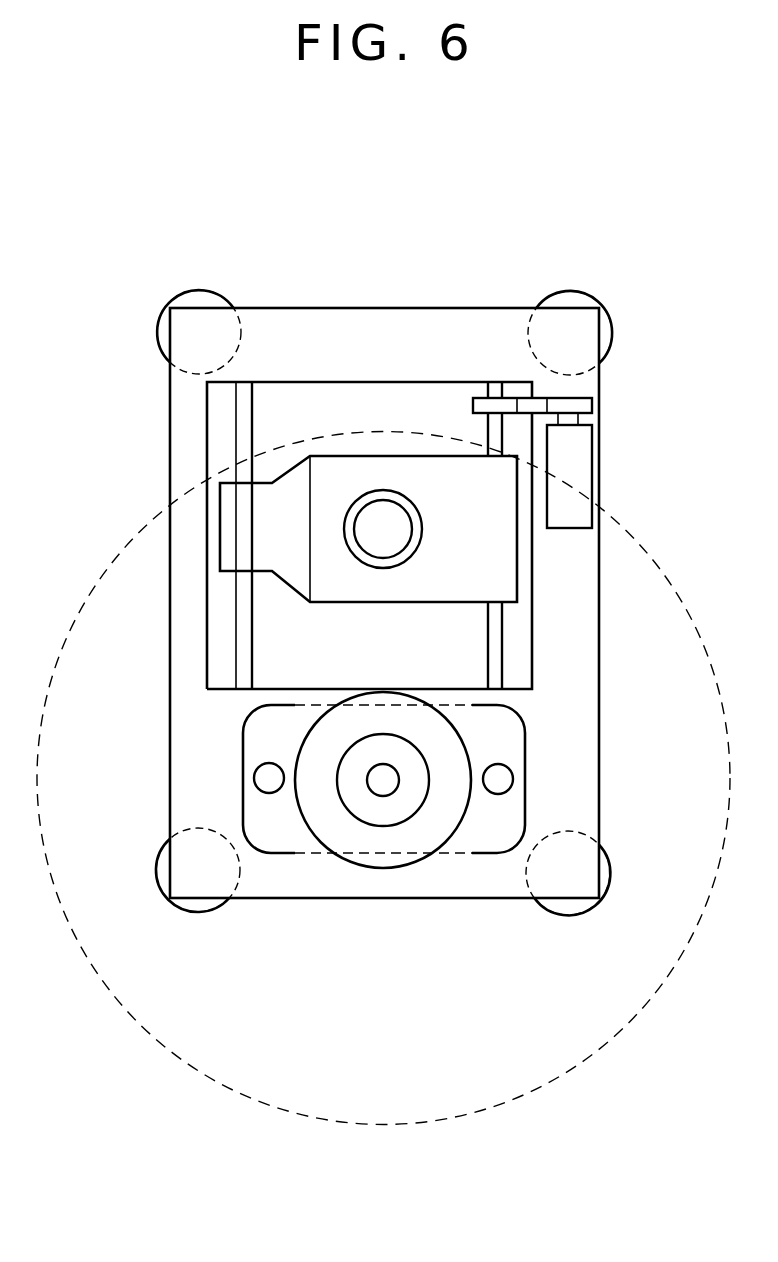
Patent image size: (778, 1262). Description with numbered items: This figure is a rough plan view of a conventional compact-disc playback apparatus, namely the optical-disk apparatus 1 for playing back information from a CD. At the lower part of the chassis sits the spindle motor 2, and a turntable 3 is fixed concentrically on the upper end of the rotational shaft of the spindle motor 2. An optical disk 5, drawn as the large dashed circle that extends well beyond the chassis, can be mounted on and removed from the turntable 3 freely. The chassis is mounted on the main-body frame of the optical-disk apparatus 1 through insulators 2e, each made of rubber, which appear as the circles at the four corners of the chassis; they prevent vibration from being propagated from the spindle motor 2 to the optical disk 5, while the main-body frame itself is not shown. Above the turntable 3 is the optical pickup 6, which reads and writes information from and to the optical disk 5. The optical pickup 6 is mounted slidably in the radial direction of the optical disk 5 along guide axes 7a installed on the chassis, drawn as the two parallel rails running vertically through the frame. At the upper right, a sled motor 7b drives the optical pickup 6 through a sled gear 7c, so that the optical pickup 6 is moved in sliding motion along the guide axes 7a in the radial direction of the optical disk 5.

The optical-disk apparatus 1 is at (122, 268).
The spindle motor 2 is at (473, 843).
The insulators 2e is at (608, 876).
The turntable 3 is at (352, 838).
The optical disk 5 is at (565, 1058).
The optical pickup 6 is at (383, 507).
The guide axes 7a is at (245, 385).
The sled motor 7b is at (577, 468).
The sled gear 7c is at (580, 407).